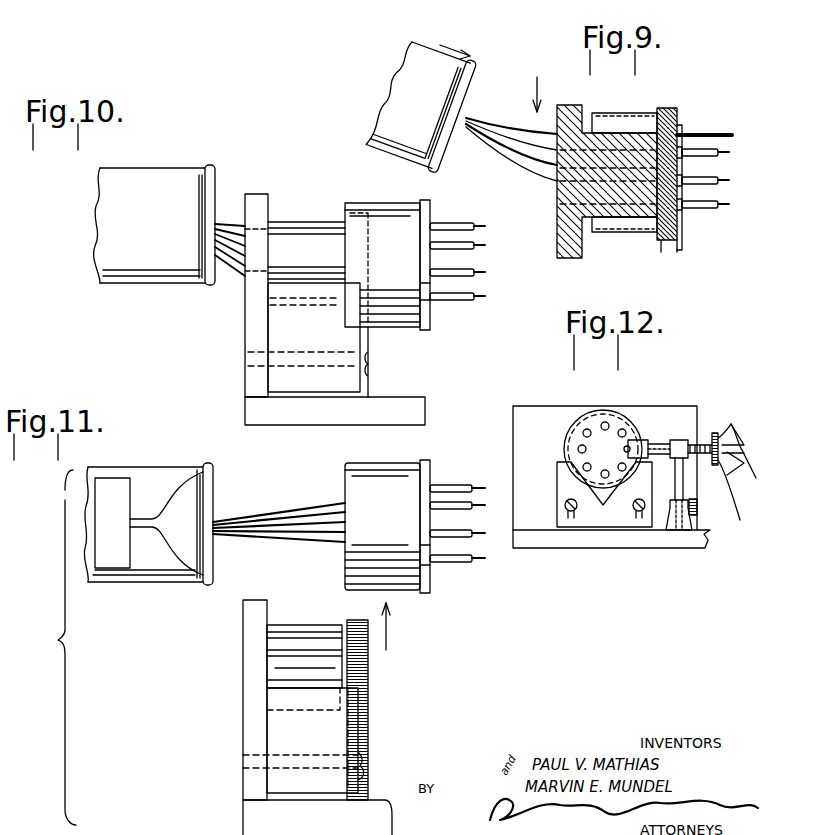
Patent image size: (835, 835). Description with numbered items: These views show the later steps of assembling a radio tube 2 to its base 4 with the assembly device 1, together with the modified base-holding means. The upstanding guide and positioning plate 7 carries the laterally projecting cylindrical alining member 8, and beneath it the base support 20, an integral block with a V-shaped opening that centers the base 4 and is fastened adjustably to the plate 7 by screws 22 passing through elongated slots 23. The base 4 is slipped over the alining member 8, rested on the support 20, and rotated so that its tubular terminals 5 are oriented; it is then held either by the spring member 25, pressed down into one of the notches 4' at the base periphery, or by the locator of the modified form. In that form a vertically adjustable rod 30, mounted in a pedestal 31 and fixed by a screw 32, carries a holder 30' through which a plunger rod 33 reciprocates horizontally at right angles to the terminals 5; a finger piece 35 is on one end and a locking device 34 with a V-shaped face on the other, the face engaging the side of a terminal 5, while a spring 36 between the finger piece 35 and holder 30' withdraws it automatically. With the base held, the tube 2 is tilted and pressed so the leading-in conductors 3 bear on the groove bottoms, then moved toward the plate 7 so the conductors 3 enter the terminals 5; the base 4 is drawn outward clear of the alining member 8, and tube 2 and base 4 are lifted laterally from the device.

In FIG. 10, the device or apparatus 1 is at (250, 340).
In FIG. 11, the device or apparatus 1 is at (245, 697).
In FIG. 9, the radio tube 2 is at (410, 50).
In FIG. 10, the radio tube 2 is at (142, 283).
In FIG. 11, the radio tube 2 is at (143, 582).
In FIG. 9, the leading-in conductors 3 is at (520, 158).
In FIG. 10, the leading-in conductors 3 is at (226, 212).
In FIG. 11, the leading-in conductors 3 is at (293, 508).
In FIG. 9, the base 4 is at (637, 168).
In FIG. 10, the base 4 is at (382, 251).
In FIG. 11, the base 4 is at (382, 514).
In FIG. 10, the notches 4' is at (441, 265).
In FIG. 11, the notches 4' is at (439, 514).
In FIG. 12, the notches 4' is at (603, 437).
In FIG. 9, the tubular terminals 5 is at (724, 184).
In FIG. 10, the tubular terminals 5 is at (472, 258).
In FIG. 11, the tubular terminals 5 is at (470, 520).
In FIG. 12, the tubular terminals 5 is at (606, 422).
In FIG. 10, the guide and positioning plate 7 is at (248, 296).
In FIG. 12, the guide and positioning plate 7 is at (526, 410).
In FIG. 9, the alining member 8 is at (622, 222).
In FIG. 11, the alining member 8 is at (272, 660).
In FIG. 10, the base support 20 is at (280, 378).
In FIG. 11, the base support 20 is at (278, 726).
In FIG. 12, the base support 20 is at (560, 486).
In FIG. 10, the screws 22 is at (370, 368).
In FIG. 11, the screws 22 is at (364, 756).
In FIG. 12, the screws 22 is at (565, 508).
In FIG. 12, the elongated slots 23 is at (585, 518).
In FIG. 9, the spring member 25 is at (678, 255).
In FIG. 10, the spring member 25 is at (370, 342).
In FIG. 11, the spring member 25 is at (368, 680).
In FIG. 12, the rod 30 is at (669, 479).
In FIG. 12, the holder 30' is at (699, 425).
In FIG. 12, the pedestal 31 is at (672, 530).
In FIG. 12, the screw 32 is at (697, 510).
In FIG. 12, the plunger rod 33 is at (660, 440).
In FIG. 12, the locking device 34 is at (628, 447).
In FIG. 12, the finger piece 35 is at (720, 466).
In FIG. 12, the spring 36 is at (712, 434).